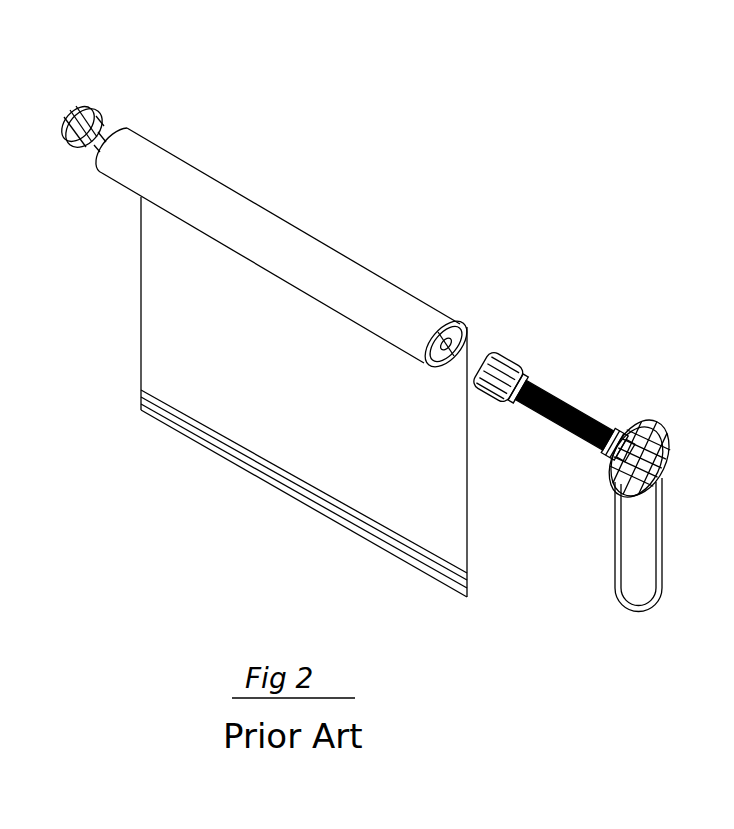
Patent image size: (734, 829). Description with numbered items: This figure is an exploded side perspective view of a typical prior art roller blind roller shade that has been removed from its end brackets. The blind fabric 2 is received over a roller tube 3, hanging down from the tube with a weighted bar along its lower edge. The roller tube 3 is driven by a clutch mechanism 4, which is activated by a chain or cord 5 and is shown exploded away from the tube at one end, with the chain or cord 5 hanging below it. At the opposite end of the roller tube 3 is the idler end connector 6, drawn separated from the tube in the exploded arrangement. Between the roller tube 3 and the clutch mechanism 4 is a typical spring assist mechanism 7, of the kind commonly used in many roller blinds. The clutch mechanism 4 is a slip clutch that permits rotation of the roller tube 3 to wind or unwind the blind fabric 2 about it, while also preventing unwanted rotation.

The blind fabric 2 is at (450, 515).
The roller tube 3 is at (466, 342).
The clutch mechanism 4 is at (653, 418).
The chain or cord 5 is at (663, 532).
The idler end connector 6 is at (72, 105).
The spring assist mechanism 7 is at (547, 390).